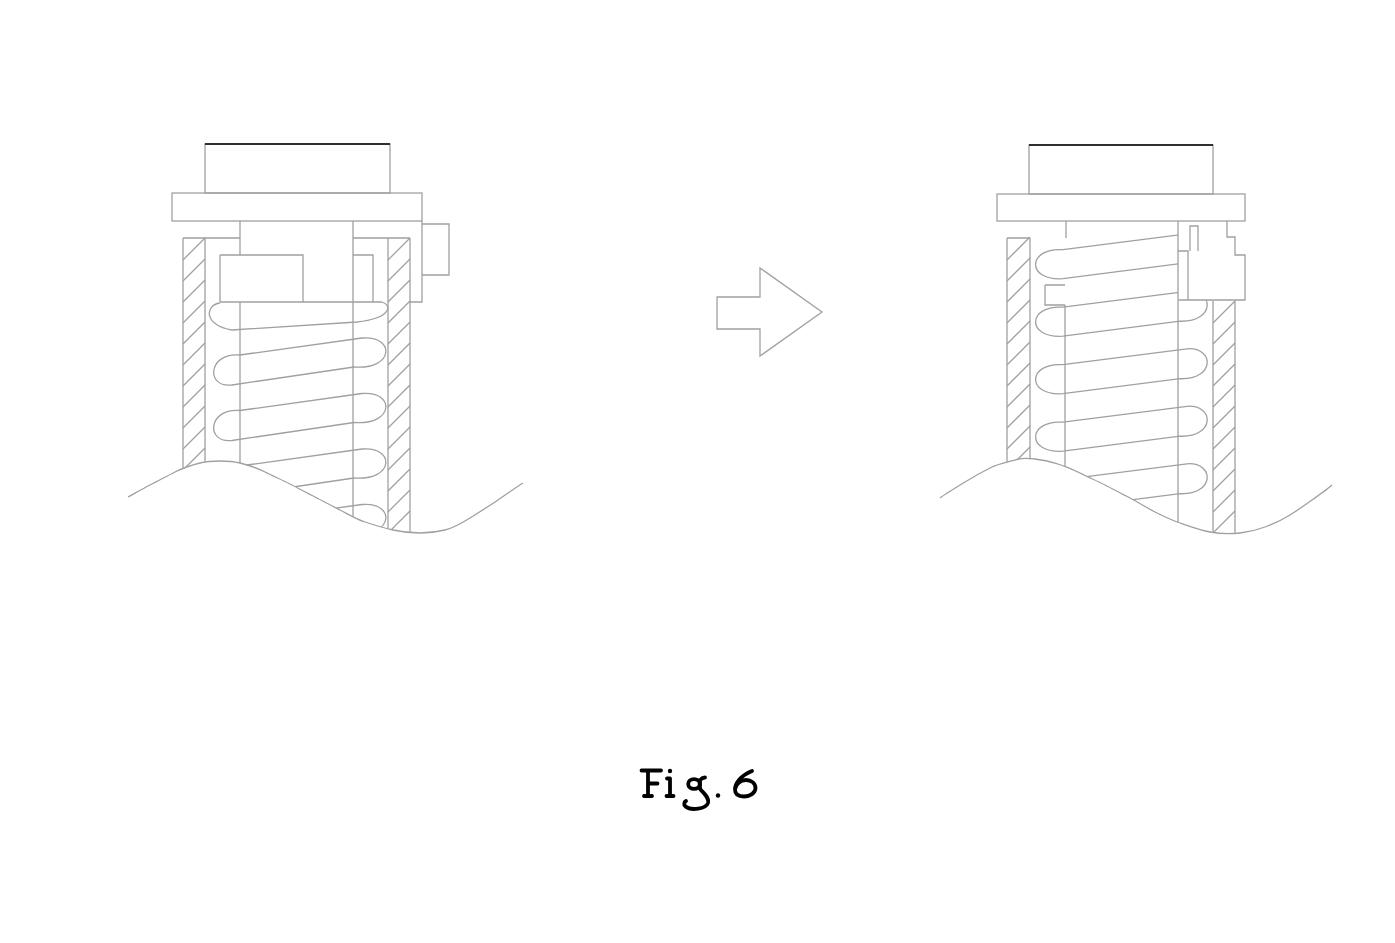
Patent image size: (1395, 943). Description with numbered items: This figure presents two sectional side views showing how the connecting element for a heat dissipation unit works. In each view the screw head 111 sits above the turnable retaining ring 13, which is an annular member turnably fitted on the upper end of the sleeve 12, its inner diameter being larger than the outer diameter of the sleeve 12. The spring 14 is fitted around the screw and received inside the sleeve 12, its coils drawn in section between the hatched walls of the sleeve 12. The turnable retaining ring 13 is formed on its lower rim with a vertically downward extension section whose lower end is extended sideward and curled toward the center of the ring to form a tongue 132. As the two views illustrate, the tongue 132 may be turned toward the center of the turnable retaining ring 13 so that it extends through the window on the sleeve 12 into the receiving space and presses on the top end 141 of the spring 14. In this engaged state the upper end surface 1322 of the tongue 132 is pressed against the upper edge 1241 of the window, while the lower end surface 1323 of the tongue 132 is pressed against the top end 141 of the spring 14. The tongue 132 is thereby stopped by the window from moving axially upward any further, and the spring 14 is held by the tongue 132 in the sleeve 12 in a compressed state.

The screw head 111 is at (1320, 136).
The sleeve 12 is at (497, 415).
The turnable retaining ring 13 is at (515, 168).
The tongue 132 is at (265, 268).
The upper end surface 1322 is at (236, 258).
The lower end surface 1323 is at (208, 314).
The upper edge 1241 is at (510, 255).
The spring 14 is at (497, 360).
The top end 141 is at (510, 307).